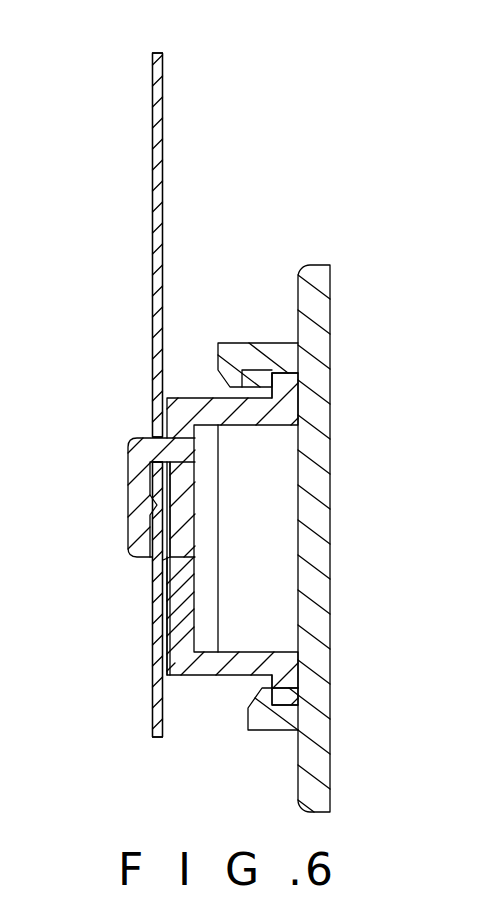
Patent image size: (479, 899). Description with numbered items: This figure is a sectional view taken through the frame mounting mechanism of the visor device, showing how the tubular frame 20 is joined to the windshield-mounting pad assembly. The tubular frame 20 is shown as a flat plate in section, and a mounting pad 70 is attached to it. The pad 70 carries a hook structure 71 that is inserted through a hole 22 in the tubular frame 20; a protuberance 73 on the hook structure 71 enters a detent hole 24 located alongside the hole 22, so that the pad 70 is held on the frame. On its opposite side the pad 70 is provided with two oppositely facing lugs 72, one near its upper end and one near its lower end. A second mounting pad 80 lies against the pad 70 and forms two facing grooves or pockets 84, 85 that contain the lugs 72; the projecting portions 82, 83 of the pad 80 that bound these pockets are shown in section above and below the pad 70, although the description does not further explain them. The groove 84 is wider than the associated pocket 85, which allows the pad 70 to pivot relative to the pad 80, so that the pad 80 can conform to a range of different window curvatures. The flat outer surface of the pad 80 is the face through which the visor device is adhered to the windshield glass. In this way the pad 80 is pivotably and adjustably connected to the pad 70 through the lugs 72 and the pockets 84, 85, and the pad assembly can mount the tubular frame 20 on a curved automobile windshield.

The tubular frame 20 is at (155, 710).
The hole 22 is at (155, 368).
The detent hole 24 is at (152, 238).
The mounting pad 70 is at (250, 418).
The hook structure 71 is at (140, 505).
The lug 72 is at (297, 383).
The protuberance 73 is at (173, 529).
The mounting pad 80 is at (323, 512).
The upper hook 82 is at (223, 368).
The lower hook 83 is at (262, 718).
The groove 84 is at (258, 375).
The pocket 85 is at (287, 690).